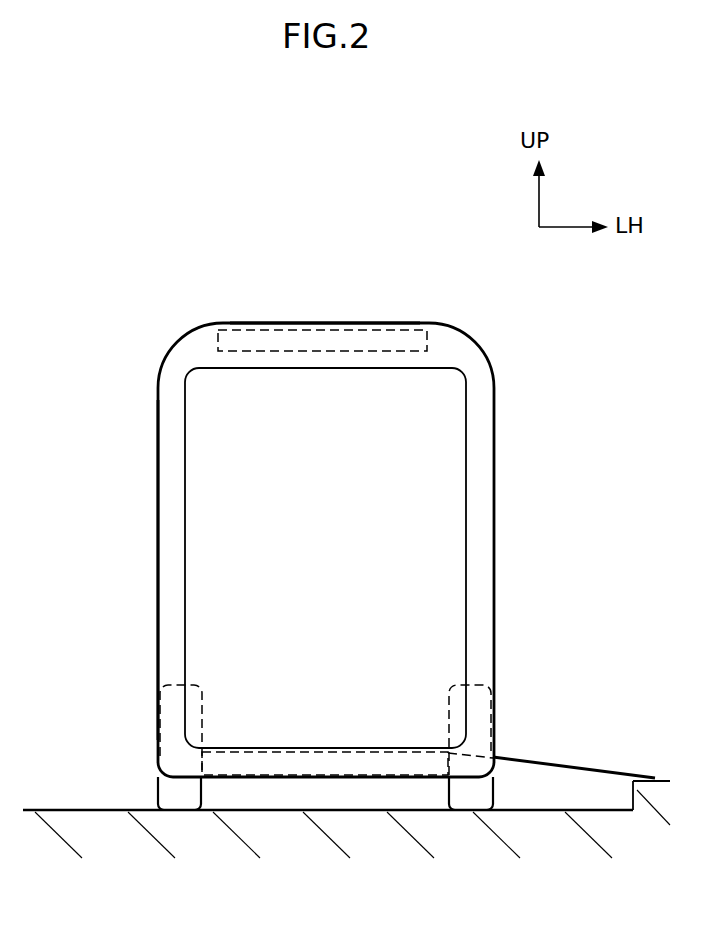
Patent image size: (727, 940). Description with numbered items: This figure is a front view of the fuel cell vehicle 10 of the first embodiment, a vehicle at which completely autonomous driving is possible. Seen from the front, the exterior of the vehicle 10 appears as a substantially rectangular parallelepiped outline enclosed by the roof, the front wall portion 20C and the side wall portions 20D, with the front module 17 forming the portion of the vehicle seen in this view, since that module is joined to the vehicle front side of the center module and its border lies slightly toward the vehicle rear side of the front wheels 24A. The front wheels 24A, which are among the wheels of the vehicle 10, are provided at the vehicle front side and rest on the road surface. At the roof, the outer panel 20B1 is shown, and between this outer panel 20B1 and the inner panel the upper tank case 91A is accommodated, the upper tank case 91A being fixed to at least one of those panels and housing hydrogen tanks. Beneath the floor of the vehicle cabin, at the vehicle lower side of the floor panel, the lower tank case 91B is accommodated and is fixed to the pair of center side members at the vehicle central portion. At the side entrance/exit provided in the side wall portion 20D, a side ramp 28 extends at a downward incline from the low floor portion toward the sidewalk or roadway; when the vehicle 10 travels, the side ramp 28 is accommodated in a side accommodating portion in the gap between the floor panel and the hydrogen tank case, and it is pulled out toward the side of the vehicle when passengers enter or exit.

The vehicle 10 is at (419, 262).
The front module 17 is at (486, 455).
The outer panel 20B1 is at (237, 322).
The front wall portion 20C is at (202, 427).
The side wall portion 20D is at (156, 488).
The upper tank case 91A is at (322, 328).
The lower tank case 91B is at (302, 776).
The front wheels 24A is at (178, 792).
The side ramp 28 is at (598, 768).